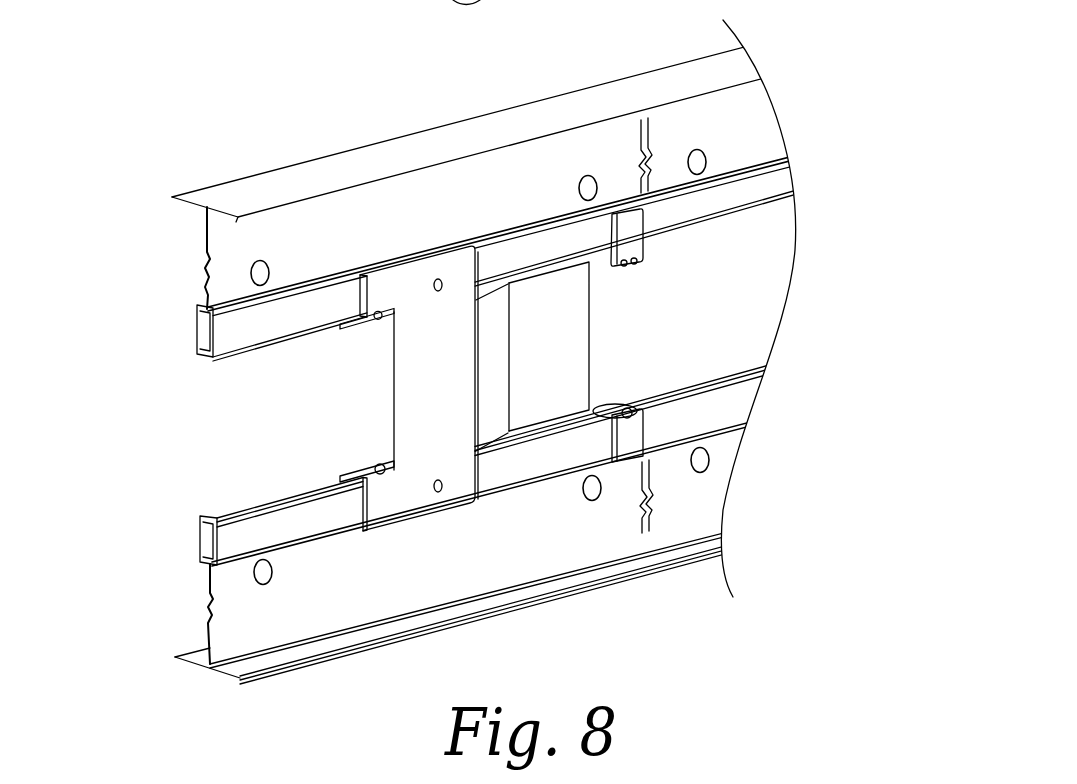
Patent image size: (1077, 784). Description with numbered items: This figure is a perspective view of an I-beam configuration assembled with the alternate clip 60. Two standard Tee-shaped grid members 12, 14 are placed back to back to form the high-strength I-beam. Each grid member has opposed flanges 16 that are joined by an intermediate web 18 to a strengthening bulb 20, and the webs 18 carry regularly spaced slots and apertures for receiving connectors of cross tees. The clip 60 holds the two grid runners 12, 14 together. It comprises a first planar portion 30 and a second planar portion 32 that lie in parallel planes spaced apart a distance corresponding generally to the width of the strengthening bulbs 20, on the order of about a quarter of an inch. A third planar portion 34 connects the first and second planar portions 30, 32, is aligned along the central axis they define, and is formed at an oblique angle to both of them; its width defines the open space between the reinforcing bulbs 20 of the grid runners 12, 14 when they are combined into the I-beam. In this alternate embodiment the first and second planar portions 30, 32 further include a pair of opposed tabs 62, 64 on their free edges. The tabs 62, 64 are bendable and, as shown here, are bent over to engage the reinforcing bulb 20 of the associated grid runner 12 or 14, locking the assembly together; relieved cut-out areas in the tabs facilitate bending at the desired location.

The Tee-shaped grid member 12 is at (218, 625).
The Tee-shaped grid member 14 is at (212, 258).
The flange 16 is at (172, 200).
The web 18 is at (423, 214).
The strengthening bulb 20 is at (205, 329).
The first planar portion 30 is at (425, 397).
The second planar portion 32 is at (538, 334).
The third planar portion 34 is at (480, 364).
The clip 60 is at (444, 388).
The tab 62 is at (360, 470).
The tab 64 is at (635, 230).